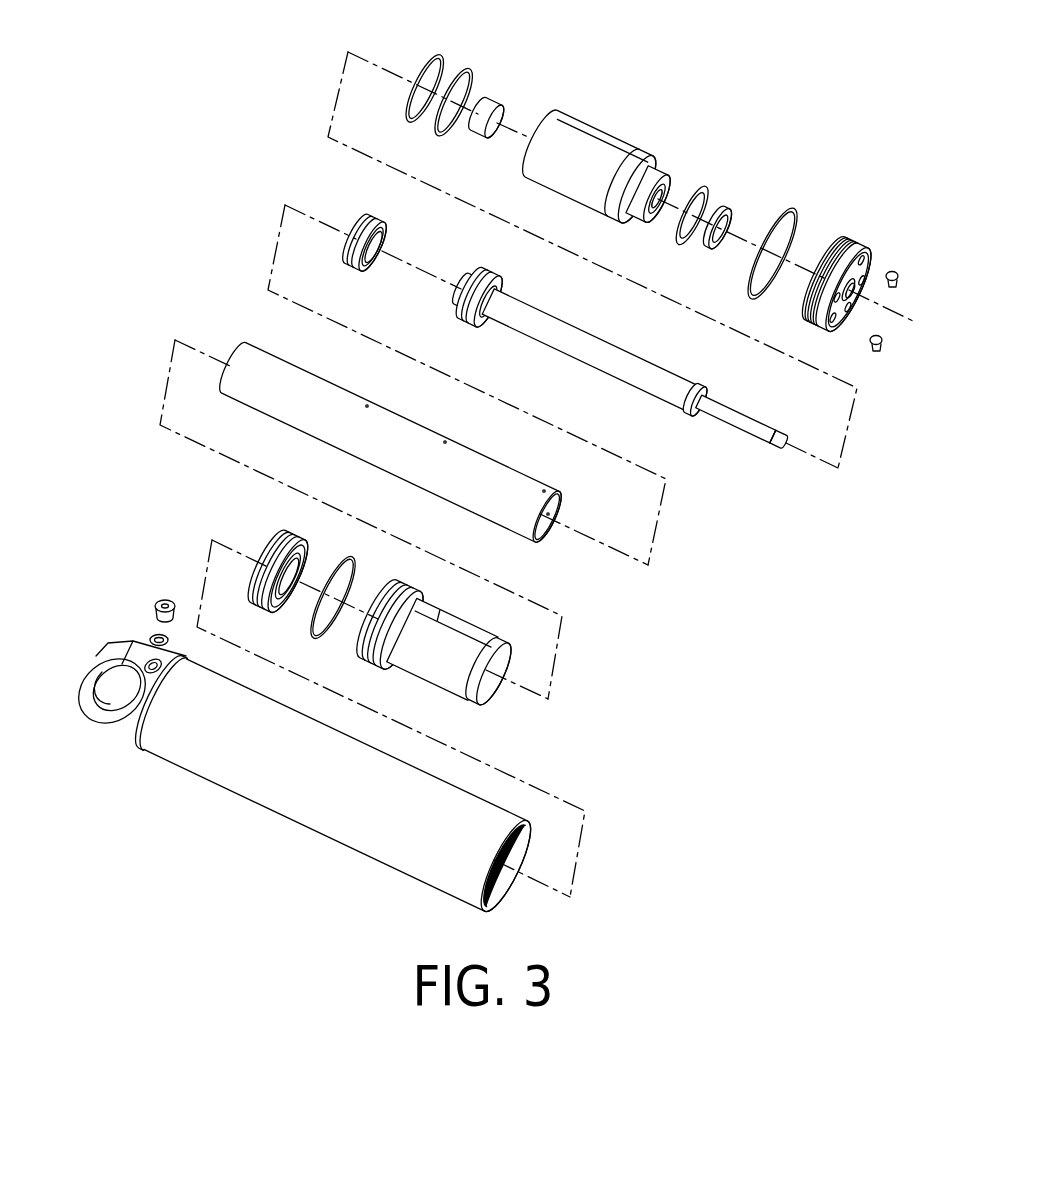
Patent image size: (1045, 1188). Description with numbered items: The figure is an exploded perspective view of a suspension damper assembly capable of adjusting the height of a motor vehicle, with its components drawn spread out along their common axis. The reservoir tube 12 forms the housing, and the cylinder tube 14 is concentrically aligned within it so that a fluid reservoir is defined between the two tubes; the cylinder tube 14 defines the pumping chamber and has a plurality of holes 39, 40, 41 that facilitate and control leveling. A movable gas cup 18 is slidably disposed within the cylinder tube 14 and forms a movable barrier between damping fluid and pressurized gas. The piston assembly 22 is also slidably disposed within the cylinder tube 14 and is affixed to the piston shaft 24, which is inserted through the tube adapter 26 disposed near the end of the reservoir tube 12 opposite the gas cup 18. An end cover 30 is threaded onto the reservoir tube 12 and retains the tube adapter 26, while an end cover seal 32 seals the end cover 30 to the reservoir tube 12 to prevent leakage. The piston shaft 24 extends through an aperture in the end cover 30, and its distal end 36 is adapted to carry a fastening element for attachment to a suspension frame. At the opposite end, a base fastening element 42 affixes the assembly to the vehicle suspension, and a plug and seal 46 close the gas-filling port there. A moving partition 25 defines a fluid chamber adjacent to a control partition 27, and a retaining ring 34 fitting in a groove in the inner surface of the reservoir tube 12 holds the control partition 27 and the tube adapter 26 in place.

The reservoir tube 12 is at (168, 757).
The cylinder tube 14 is at (257, 410).
The gas cup 18 is at (362, 268).
The piston assembly 22 is at (478, 273).
The piston shaft 24 is at (627, 352).
The moving partition 25 is at (270, 537).
The tube adapter 26 is at (642, 142).
The control partition 27 is at (423, 588).
The end cover 30 is at (868, 250).
The end cover seal 32 is at (746, 293).
The retaining ring 34 is at (348, 552).
The distal end 36 is at (728, 427).
The hole 39 is at (350, 442).
The hole 40 is at (548, 514).
The hole 41 is at (428, 478).
The base fastening element 42 is at (98, 710).
The plug and seal 46 is at (151, 635).